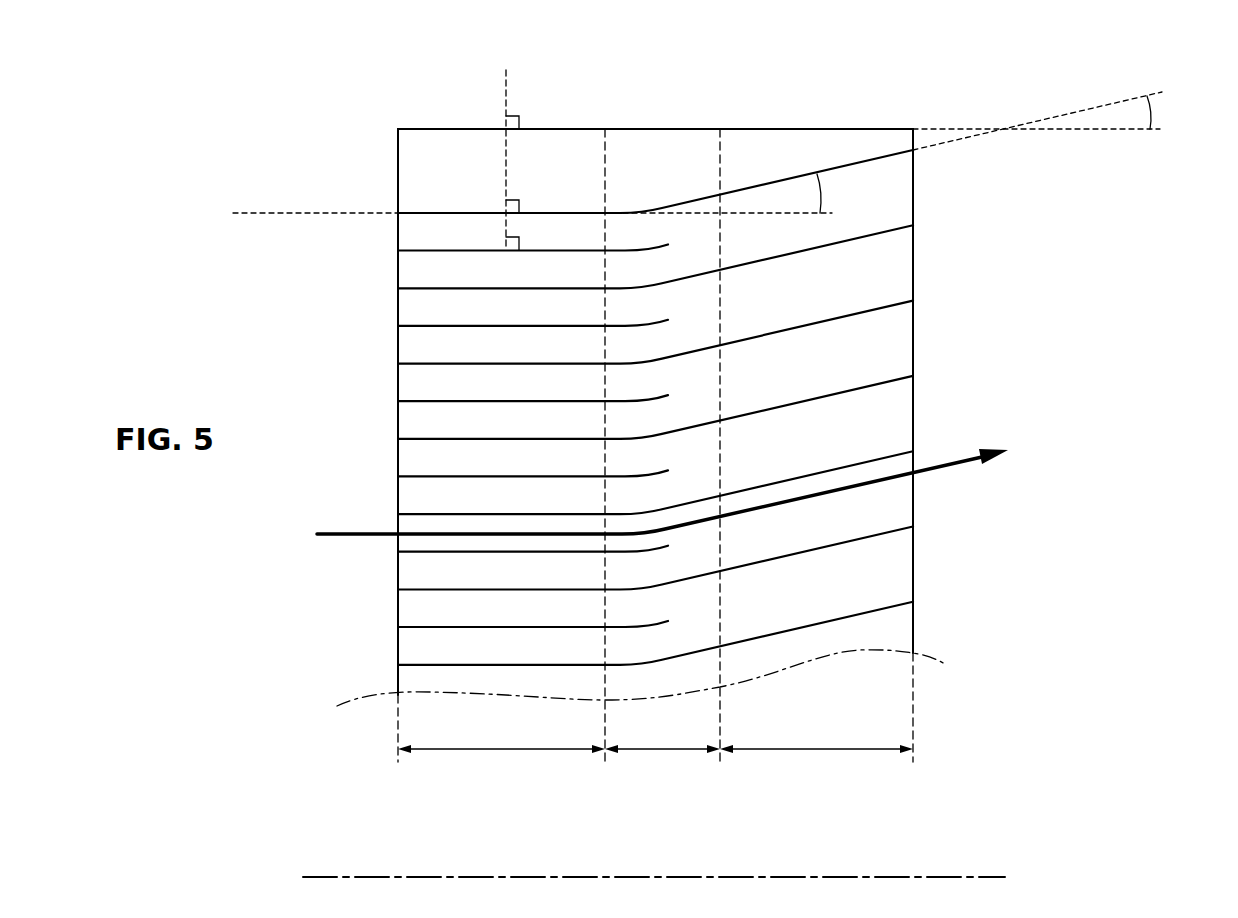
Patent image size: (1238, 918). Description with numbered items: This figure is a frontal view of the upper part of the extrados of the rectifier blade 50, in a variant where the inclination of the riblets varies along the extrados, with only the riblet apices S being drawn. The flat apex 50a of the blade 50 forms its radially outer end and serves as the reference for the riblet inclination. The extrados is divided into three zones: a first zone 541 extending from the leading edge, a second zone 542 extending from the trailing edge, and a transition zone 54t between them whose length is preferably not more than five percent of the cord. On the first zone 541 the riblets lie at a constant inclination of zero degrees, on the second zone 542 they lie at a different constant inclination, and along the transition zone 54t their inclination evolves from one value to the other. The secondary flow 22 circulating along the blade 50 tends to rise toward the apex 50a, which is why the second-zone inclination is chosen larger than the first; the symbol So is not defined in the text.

The rectifier blade 50 is at (963, 400).
The apex 50a is at (654, 128).
The apex of riblet S is at (629, 411).
The secondary flow 22 is at (957, 465).
The first zone 541 is at (503, 753).
The transition zone 54t is at (658, 753).
The second zone 542 is at (810, 753).
The inlet flow So is at (265, 194).